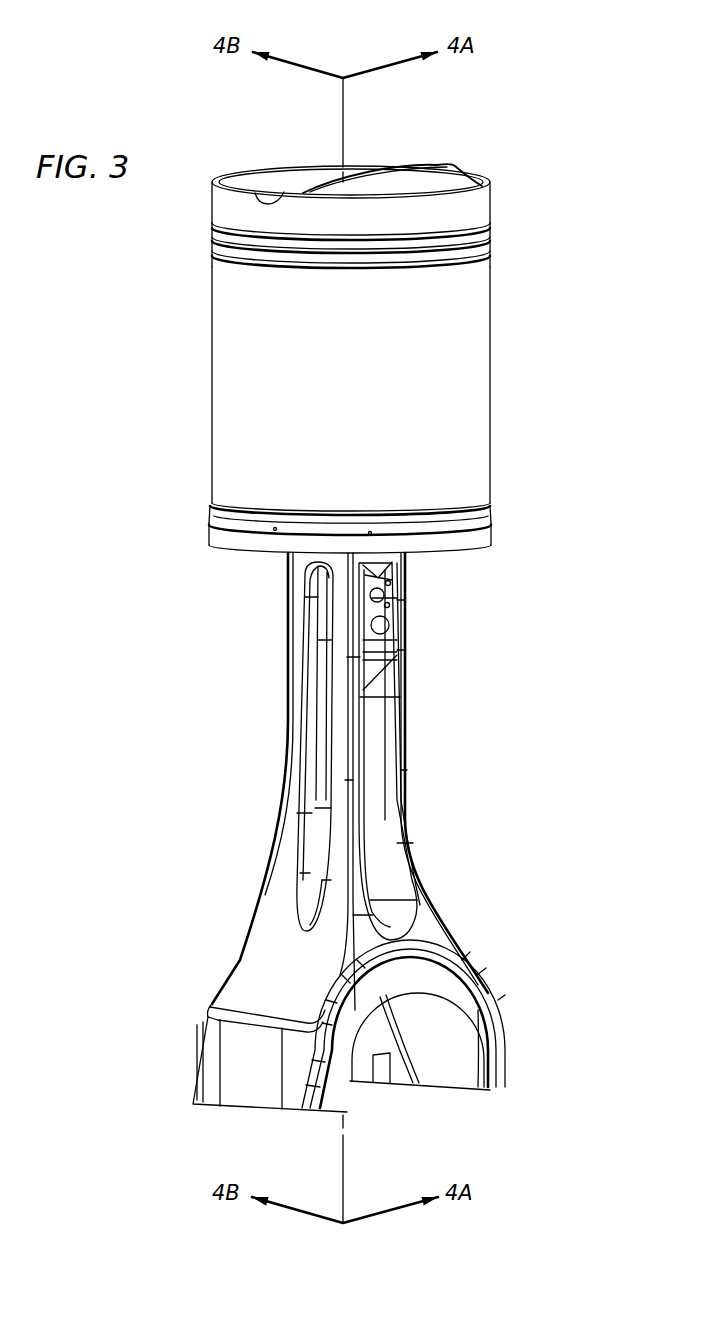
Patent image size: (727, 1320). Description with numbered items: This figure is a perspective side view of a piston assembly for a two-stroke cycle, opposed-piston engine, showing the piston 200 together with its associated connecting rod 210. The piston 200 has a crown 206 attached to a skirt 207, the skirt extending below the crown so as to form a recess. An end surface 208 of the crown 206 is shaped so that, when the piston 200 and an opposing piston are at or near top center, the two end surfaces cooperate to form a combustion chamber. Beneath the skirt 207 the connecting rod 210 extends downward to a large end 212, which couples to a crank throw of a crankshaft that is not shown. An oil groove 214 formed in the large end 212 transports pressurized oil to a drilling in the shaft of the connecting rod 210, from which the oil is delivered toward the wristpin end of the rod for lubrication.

The piston 200 is at (548, 343).
The crown 206 is at (478, 205).
The skirt 207 is at (490, 407).
The end surface 208 is at (395, 162).
The connecting rod 210 is at (445, 778).
The large end 212 is at (492, 1032).
The oil groove 214 is at (413, 1050).